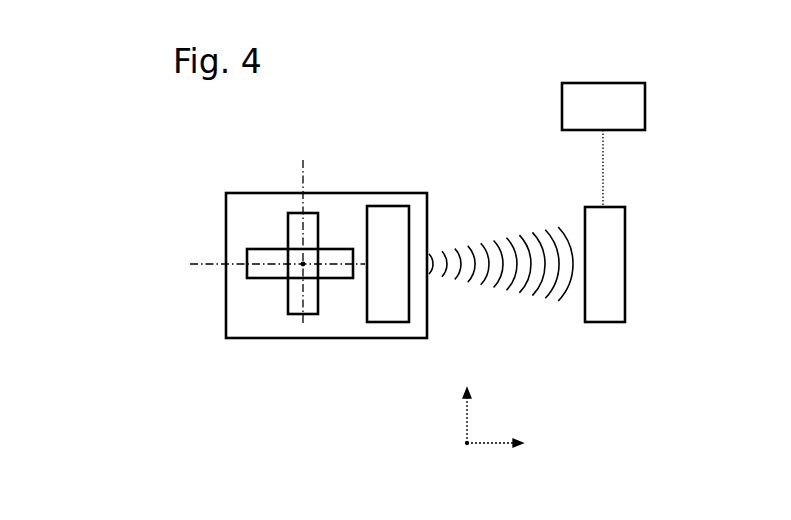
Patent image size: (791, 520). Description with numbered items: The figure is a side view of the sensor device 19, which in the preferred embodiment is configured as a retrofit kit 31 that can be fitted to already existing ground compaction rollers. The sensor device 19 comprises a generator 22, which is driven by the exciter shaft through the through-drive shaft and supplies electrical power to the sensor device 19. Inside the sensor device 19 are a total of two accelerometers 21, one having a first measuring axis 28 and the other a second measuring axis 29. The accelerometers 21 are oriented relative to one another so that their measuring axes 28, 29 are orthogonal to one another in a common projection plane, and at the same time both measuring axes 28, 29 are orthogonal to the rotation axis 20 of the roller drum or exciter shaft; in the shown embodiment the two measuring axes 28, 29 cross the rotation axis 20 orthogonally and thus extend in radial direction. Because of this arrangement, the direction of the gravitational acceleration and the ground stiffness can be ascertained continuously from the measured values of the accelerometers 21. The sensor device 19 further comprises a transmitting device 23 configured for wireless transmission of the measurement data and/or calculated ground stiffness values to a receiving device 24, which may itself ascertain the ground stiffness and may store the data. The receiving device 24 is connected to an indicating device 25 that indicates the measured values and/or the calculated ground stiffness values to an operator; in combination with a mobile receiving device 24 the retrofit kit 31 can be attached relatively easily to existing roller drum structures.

The sensor device 19 is at (405, 159).
The rotation axis 20 is at (303, 264).
The accelerometers 21 is at (258, 268).
The generator 22 is at (243, 227).
The transmitting device 23 is at (387, 305).
The receiving device 24 is at (606, 300).
The indicating device 25 is at (600, 100).
The first measuring axis 28 is at (305, 177).
The second measuring axis 29 is at (205, 268).
The retrofit kit 31 is at (172, 225).